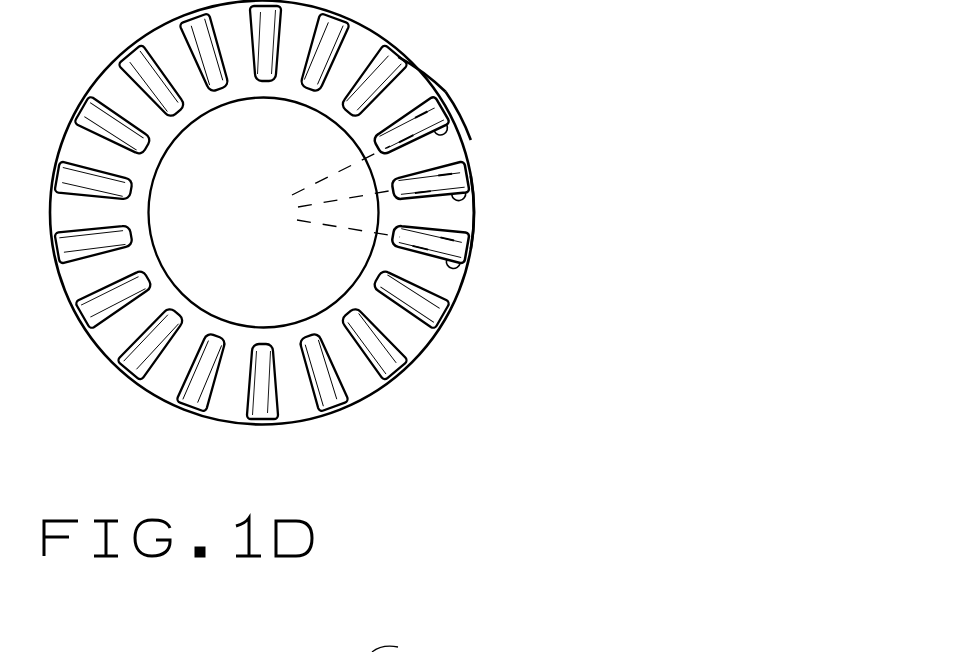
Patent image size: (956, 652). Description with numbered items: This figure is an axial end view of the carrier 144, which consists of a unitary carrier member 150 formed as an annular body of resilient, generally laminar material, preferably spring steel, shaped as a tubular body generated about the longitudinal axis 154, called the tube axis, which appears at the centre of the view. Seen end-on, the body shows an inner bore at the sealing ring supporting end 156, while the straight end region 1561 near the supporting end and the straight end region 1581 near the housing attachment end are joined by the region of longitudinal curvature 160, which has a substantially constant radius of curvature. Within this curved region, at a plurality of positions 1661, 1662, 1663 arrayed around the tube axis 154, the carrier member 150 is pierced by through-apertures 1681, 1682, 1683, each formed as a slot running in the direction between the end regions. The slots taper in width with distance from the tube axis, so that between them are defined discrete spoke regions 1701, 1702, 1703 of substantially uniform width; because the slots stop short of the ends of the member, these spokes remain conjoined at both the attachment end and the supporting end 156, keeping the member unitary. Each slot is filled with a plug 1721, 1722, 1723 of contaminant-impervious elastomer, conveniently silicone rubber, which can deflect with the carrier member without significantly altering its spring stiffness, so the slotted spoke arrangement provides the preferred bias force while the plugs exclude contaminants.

The carrier 144 is at (341, 234).
The carrier member 150 is at (425, 345).
The longitudinal axis 154 is at (284, 210).
The sealing ring supporting end 156 is at (281, 308).
The end region 1561 is at (237, 335).
The end region 1581 is at (150, 387).
The region of longitudinal curvature 160 is at (362, 378).
The position 1661 is at (501, 273).
The position 1662 is at (405, 183).
The position 1663 is at (418, 116).
The through-aperture 1681 is at (462, 278).
The through-aperture 1682 is at (455, 204).
The through-aperture 1683 is at (462, 135).
The spoke region 1701 is at (453, 215).
The spoke region 1702 is at (427, 157).
The spoke region 1703 is at (405, 90).
The plug 1721 is at (430, 253).
The plug 1722 is at (392, 187).
The plug 1723 is at (423, 115).